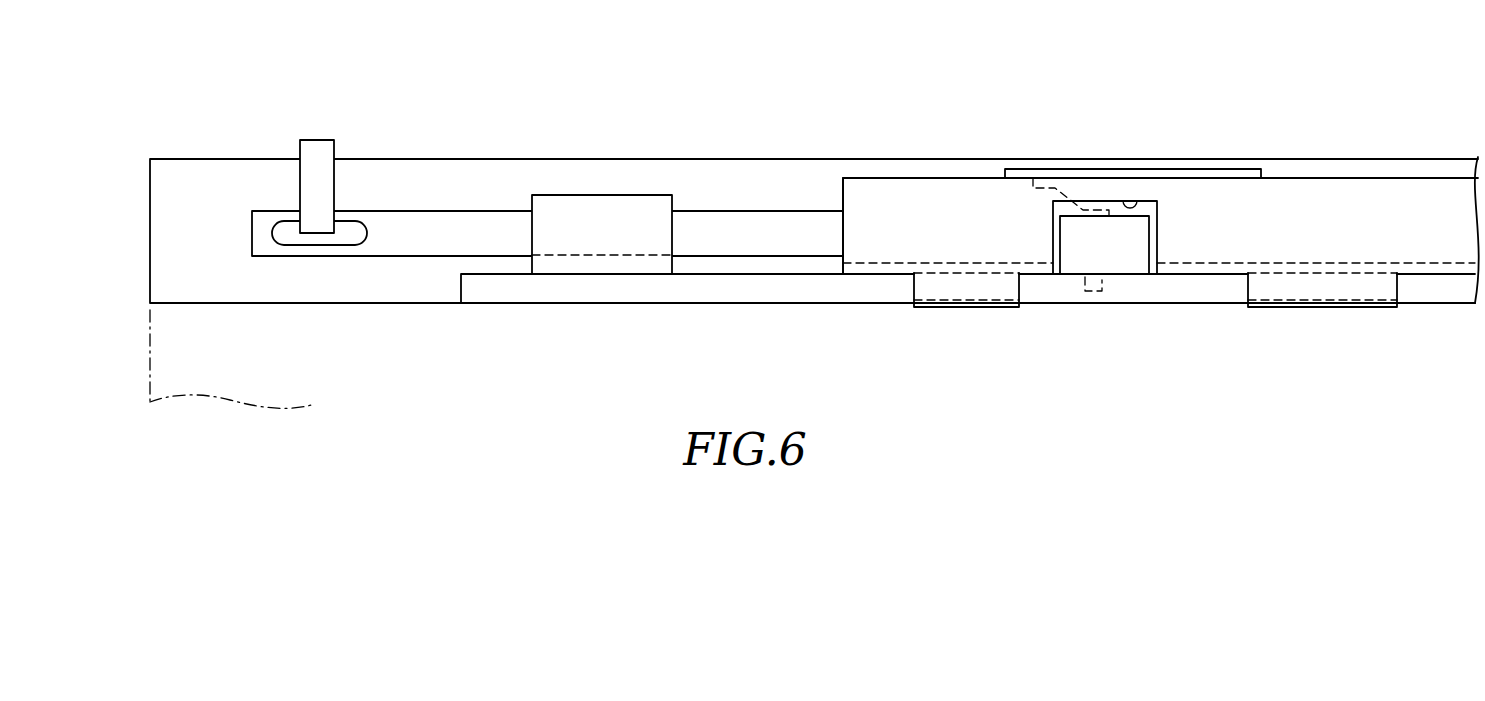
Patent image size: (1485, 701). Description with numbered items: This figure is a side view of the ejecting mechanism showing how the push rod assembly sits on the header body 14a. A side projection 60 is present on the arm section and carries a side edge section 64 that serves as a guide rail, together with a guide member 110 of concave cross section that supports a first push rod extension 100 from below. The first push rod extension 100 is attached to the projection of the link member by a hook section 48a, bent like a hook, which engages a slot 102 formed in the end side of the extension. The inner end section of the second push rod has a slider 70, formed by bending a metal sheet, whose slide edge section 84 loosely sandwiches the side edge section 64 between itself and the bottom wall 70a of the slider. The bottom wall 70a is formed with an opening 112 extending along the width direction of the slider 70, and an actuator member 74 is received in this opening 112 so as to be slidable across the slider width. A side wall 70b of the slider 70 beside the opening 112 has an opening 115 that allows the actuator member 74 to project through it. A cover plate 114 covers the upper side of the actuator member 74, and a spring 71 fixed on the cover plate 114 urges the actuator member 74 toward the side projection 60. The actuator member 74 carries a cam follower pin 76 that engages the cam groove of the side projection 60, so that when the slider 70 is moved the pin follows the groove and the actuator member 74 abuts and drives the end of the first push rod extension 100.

The header body 14a is at (222, 142).
The hook section 48a is at (318, 148).
The first push rod extension 100 is at (426, 232).
The slot 102 is at (283, 240).
The guide member 110 is at (562, 207).
The side edge section 64 is at (727, 290).
The side projection 60 is at (783, 314).
The slide edge section 84 is at (967, 307).
The slider 70 is at (921, 172).
The side wall 70b is at (857, 187).
The bottom wall 70a is at (1338, 263).
The cover plate 114 is at (1195, 170).
The actuator member 74 is at (1141, 242).
The spring 71 is at (1078, 183).
The opening 115 is at (1137, 201).
The cam follower pin 76 is at (1108, 284).
The opening 112 is at (1143, 276).